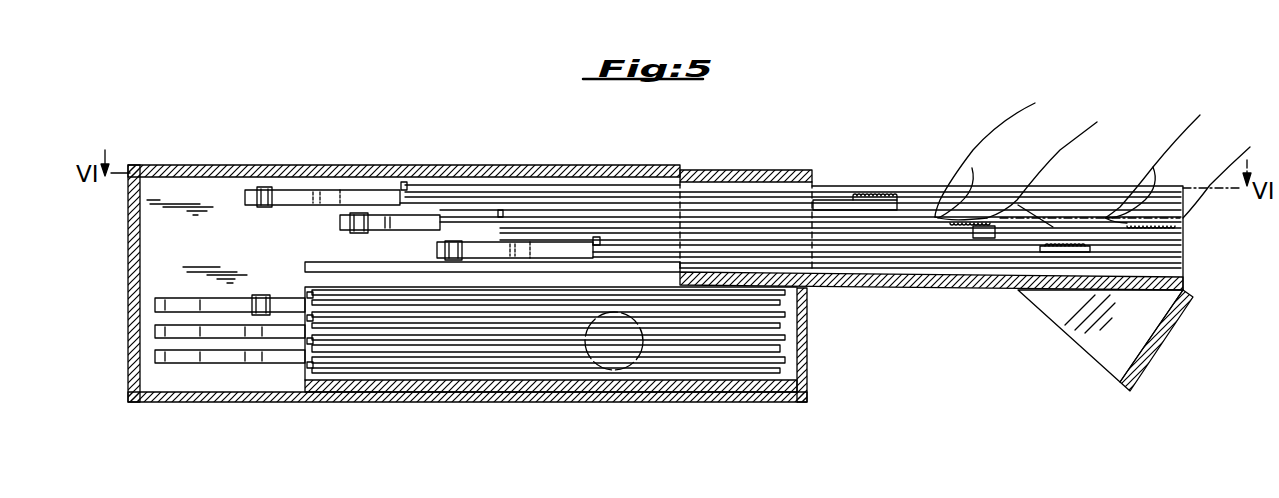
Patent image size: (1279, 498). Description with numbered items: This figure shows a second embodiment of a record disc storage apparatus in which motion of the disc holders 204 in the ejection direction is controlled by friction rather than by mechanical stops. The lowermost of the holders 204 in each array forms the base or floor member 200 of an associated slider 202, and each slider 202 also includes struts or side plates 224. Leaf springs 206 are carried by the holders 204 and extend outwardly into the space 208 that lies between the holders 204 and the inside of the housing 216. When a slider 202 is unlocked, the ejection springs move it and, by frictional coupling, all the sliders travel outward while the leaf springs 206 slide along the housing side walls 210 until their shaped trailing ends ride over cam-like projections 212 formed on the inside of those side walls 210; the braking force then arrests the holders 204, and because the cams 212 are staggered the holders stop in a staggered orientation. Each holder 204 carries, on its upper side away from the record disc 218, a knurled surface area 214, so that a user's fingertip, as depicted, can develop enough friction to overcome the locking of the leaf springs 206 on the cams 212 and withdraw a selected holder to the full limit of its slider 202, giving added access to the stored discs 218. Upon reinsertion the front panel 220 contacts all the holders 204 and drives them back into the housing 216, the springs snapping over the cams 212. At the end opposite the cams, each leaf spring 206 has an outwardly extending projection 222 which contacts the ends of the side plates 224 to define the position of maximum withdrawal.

The base or floor member 200 is at (570, 392).
The slider 202 is at (809, 347).
The disc holders 204 is at (610, 236).
The leaf springs 206 is at (300, 193).
The space 208 is at (195, 189).
The housing side walls 210 is at (163, 235).
The cam-like projections 212 is at (260, 187).
The knurled surface area 214 is at (877, 193).
The housing 216 is at (727, 163).
The record disc 218 is at (623, 242).
The front panel 220 is at (808, 378).
The outwardly extending projection 222 is at (390, 192).
The struts or side plates 224 is at (677, 183).